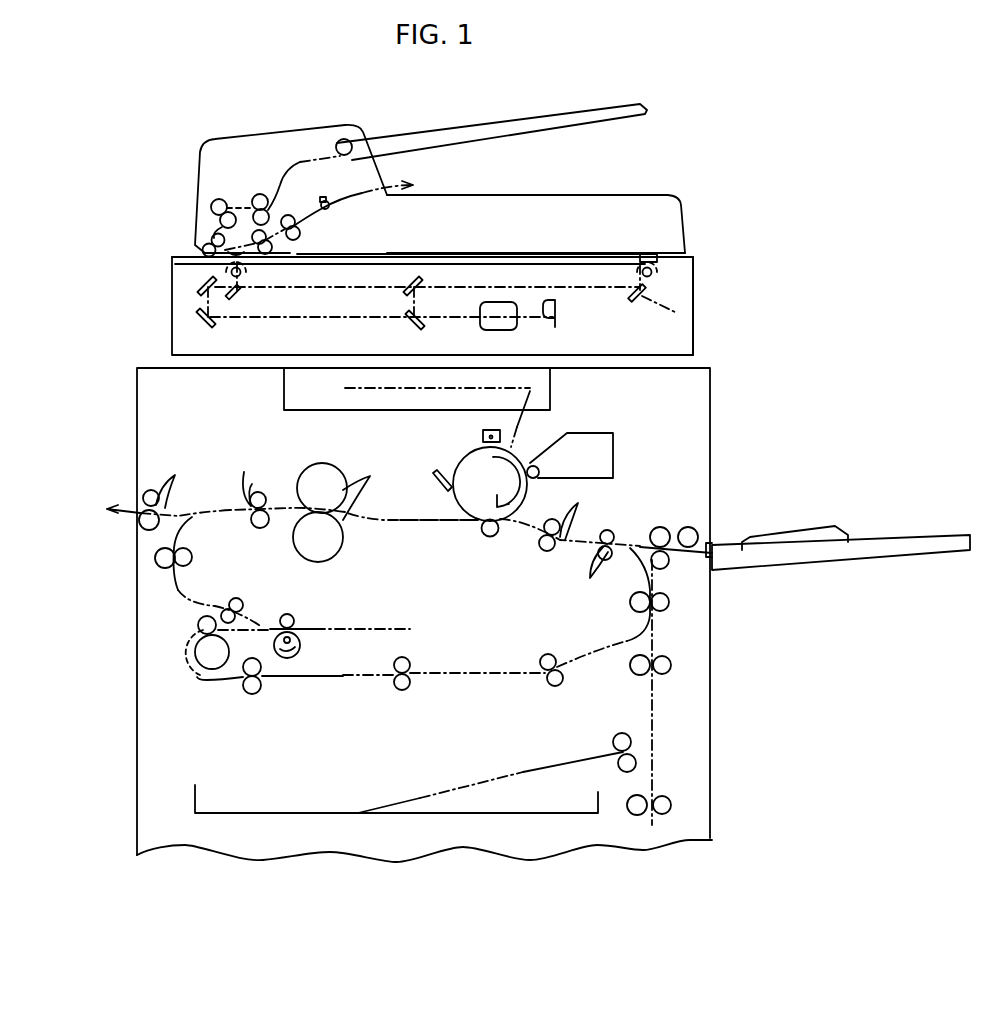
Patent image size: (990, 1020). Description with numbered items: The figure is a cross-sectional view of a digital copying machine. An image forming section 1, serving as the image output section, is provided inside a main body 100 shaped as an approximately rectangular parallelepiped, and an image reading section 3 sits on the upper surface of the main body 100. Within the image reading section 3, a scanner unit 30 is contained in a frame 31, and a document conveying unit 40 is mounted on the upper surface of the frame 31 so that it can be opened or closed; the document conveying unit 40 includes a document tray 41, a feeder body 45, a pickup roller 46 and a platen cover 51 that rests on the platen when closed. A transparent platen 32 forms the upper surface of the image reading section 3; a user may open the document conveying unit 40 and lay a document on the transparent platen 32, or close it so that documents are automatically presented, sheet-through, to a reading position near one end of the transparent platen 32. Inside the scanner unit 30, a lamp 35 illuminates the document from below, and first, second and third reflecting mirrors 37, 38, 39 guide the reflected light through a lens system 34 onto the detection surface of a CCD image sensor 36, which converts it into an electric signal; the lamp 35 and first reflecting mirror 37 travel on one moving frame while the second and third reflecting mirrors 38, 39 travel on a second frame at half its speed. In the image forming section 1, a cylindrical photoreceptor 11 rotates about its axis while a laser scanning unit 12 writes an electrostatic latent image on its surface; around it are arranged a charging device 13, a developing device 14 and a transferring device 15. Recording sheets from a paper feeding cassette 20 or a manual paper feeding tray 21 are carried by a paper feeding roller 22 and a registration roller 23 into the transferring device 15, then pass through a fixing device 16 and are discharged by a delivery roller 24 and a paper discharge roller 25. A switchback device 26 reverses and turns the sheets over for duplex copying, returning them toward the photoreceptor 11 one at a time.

The image forming section 1 is at (680, 467).
The image reading section 3 is at (140, 233).
The photoreceptor 11 is at (455, 470).
The laser scanning unit 12 is at (295, 388).
The charging device 13 is at (480, 425).
The developing device 14 is at (614, 448).
The transferring device 15 is at (488, 538).
The fixing device 16 is at (343, 488).
The paper feeding cassette 20 is at (285, 813).
The manual paper feeding tray 21 is at (835, 553).
The paper feeding roller 22 is at (745, 750).
The registration roller 23 is at (570, 518).
The delivery roller 24 is at (287, 486).
The paper discharge roller 25 is at (168, 487).
The switchback device 26 is at (343, 626).
The scanner unit 30 is at (212, 343).
The frame 31 is at (692, 258).
The transparent platen 32 is at (605, 263).
The lens system 34 is at (510, 323).
The lamp 35 is at (243, 276).
The CCD image sensor 36 is at (576, 315).
The first reflecting mirror 37 is at (240, 300).
The second reflecting mirror 38 is at (200, 283).
The third reflecting mirror 39 is at (200, 325).
The document conveying unit 40 is at (685, 170).
The document tray 41 is at (627, 113).
The document feeder body 45 is at (263, 130).
The pickup roller 46 is at (352, 148).
The platen cover 51 is at (513, 193).
The main body 100 is at (713, 396).